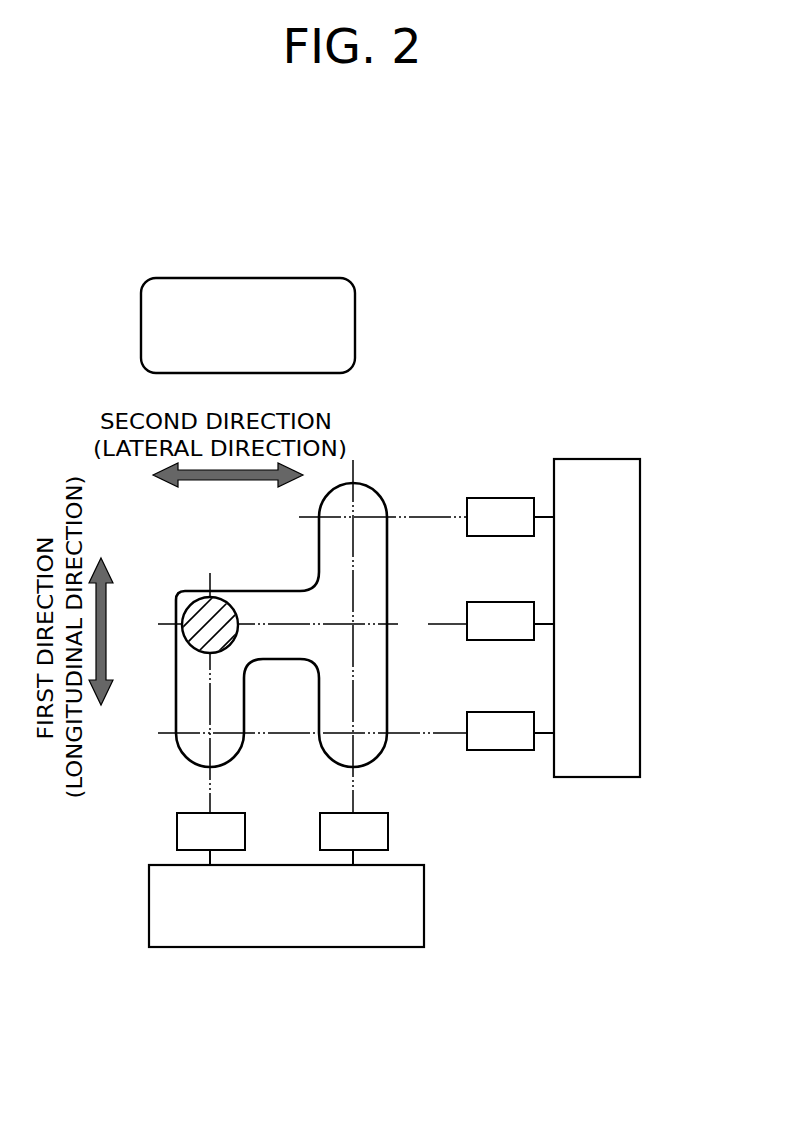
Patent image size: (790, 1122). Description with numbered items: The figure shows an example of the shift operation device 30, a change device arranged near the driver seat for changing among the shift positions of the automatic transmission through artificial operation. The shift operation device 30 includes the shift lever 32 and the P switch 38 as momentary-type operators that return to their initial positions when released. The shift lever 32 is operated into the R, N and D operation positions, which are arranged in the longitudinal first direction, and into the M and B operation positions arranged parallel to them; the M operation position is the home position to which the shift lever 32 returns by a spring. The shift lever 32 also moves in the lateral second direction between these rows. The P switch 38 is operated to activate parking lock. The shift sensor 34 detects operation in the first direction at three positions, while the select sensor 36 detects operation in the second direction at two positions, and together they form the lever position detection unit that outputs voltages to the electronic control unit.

The shift operation device 30 is at (468, 258).
The shift lever 32 is at (202, 596).
The shift sensor 34 is at (618, 468).
The select sensor 36 is at (158, 880).
The P switch 38 is at (158, 342).